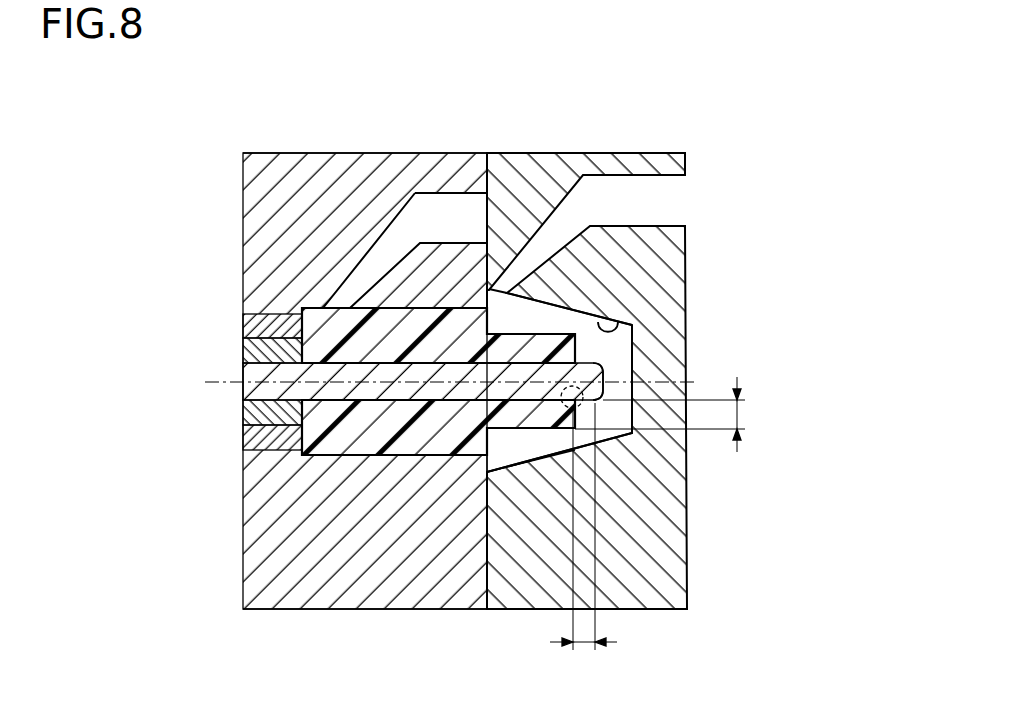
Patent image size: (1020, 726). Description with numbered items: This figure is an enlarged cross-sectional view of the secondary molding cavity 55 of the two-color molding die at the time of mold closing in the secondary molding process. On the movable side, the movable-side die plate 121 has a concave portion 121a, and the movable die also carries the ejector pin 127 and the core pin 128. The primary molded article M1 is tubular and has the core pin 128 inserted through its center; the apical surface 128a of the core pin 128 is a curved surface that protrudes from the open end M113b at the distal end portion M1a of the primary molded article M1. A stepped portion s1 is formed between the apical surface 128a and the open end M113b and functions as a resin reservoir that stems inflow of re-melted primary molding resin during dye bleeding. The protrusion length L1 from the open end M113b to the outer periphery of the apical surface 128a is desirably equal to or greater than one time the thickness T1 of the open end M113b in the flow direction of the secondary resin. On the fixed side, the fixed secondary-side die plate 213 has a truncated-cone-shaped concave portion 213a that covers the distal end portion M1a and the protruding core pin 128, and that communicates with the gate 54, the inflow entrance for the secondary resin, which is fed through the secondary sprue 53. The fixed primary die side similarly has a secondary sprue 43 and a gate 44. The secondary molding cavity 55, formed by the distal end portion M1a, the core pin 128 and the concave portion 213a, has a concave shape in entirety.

The gate 44 is at (376, 252).
The movable-side die plate 121 is at (371, 165).
The concave portion 121a is at (328, 456).
The secondary sprue 43 is at (460, 195).
The ejector pin 127 is at (245, 325).
The core pin 128 is at (258, 387).
The apical surface 128a is at (612, 378).
The primary molded article M1 is at (428, 462).
The distal end portion M1a is at (517, 440).
The fixed secondary-side die plate 213 is at (511, 168).
The concave portion 213a is at (618, 320).
The gate 54 is at (558, 205).
The secondary sprue 53 is at (620, 175).
The secondary molding cavity 55 is at (533, 323).
The open end M113b is at (608, 352).
The thickness T1 is at (740, 412).
The protrusion length L1 is at (585, 645).
The stepped portion s1 is at (574, 408).